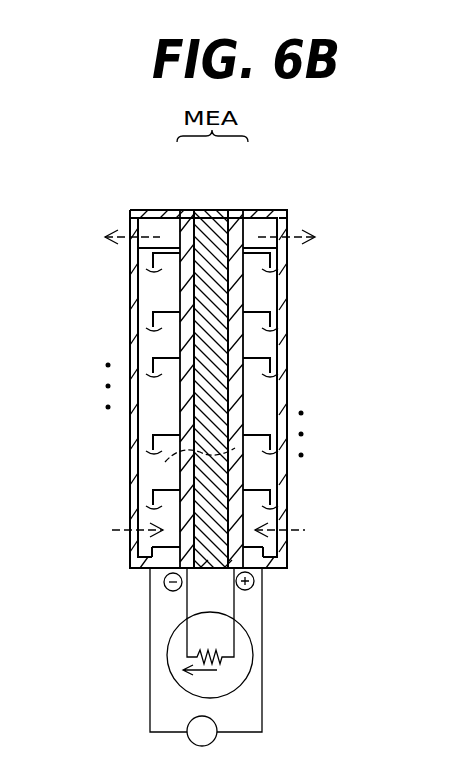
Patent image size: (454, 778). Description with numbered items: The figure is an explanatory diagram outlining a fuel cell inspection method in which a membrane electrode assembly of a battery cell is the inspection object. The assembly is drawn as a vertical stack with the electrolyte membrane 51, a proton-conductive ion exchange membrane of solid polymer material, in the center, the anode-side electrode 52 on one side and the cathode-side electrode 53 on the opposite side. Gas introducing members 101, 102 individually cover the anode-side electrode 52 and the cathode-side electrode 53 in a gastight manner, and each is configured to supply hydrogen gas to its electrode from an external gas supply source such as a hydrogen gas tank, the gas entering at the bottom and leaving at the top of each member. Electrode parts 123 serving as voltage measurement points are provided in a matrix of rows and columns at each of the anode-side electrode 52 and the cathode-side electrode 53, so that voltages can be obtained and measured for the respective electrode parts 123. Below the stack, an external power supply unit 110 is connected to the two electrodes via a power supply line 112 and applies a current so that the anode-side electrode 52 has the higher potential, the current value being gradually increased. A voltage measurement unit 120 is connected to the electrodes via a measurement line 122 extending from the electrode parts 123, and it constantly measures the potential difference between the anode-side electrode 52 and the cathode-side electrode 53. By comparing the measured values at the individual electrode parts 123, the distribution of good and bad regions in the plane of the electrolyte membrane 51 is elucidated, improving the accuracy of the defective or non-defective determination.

The gas introducing member 101 is at (138, 212).
The gas introducing member 102 is at (287, 212).
The anode-side electrode 52 is at (187, 210).
The electrolyte membrane 51 is at (210, 210).
The cathode-side electrode 53 is at (236, 210).
The electrode parts 123 is at (172, 345).
The power supply line 112 is at (234, 612).
The external power supply unit 110 is at (250, 642).
The measurement line 122 is at (262, 677).
The voltage measurement unit 120 is at (215, 724).